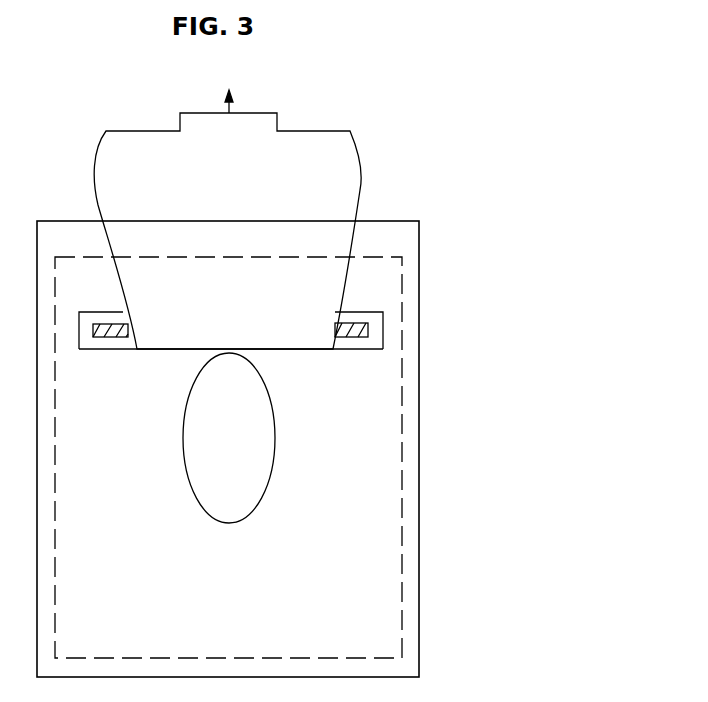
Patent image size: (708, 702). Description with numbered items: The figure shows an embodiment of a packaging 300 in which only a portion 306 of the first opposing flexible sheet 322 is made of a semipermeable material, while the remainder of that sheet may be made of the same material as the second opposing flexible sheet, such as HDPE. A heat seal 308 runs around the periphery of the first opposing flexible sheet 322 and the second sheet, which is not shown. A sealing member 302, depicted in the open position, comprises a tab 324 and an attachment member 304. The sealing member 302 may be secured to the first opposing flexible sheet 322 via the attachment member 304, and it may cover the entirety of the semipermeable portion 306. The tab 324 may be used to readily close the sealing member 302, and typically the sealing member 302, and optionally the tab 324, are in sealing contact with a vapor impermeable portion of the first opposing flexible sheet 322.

The packaging 300 is at (504, 210).
The sealing member 302 is at (341, 160).
The attachment member 304 is at (381, 319).
The semipermeable portion 306 is at (268, 425).
The heat seal 308 is at (417, 527).
The first opposing flexible sheet 322 is at (354, 380).
The tab 324 is at (239, 91).